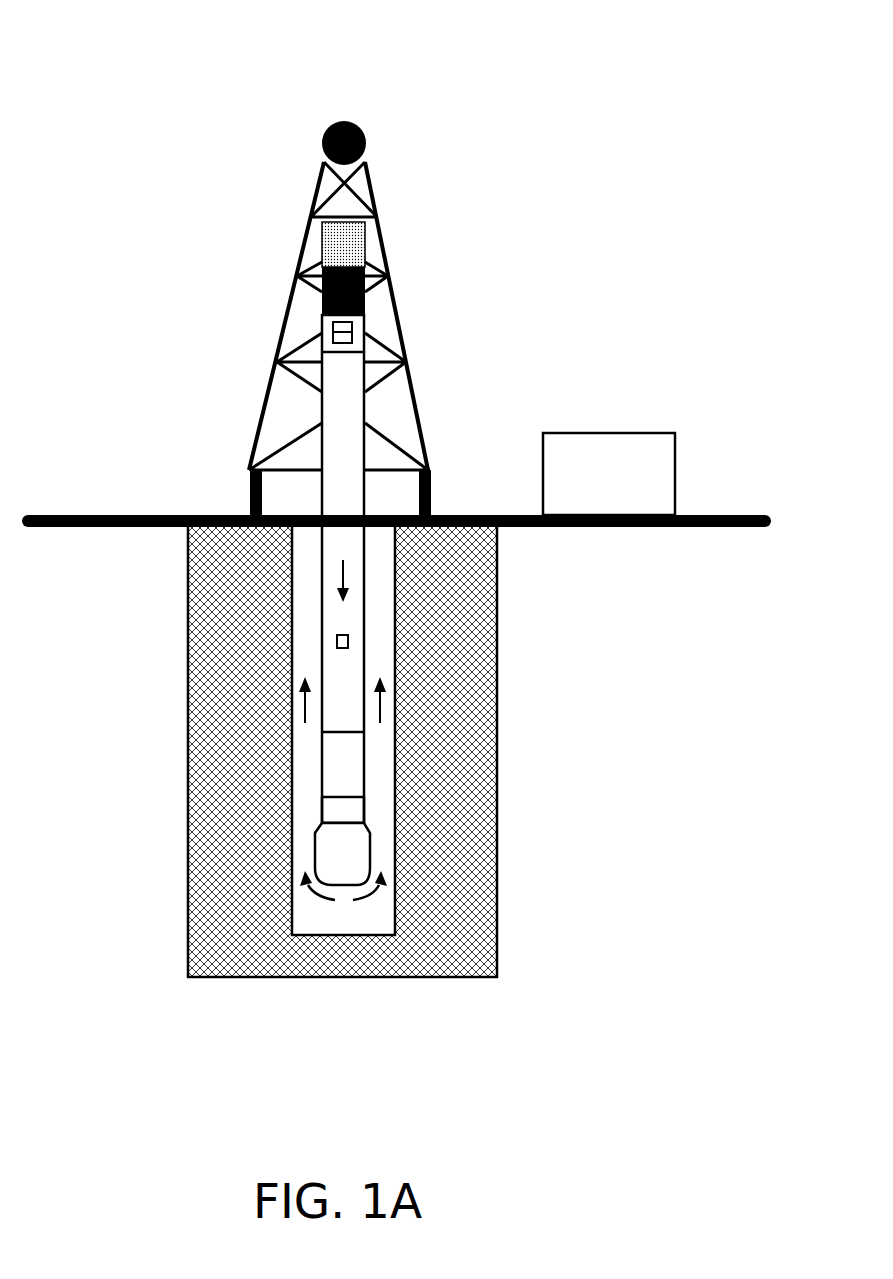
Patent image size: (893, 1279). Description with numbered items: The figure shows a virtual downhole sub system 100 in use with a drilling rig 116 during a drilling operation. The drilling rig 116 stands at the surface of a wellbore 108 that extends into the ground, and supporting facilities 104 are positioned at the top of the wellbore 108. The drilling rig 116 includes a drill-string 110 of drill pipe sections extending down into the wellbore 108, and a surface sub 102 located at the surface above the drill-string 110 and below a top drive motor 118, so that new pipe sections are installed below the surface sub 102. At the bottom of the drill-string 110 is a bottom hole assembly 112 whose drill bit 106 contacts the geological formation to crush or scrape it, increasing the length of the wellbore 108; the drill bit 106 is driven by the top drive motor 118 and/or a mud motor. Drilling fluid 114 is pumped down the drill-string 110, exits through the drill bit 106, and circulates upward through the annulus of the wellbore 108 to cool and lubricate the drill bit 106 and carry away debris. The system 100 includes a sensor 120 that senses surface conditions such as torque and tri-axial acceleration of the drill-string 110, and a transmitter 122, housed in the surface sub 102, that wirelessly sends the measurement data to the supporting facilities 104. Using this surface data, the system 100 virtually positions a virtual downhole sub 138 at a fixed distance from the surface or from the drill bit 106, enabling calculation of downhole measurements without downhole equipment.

The virtual downhole sub system 100 is at (192, 69).
The surface sub 102 is at (338, 604).
The supporting facilities 104 is at (609, 474).
The drill bit 106 is at (372, 856).
The wellbore 108 is at (292, 574).
The drill-string 110 is at (378, 318).
The bottom hole assembly 112 is at (320, 780).
The drilling fluid 114 is at (303, 753).
The drilling rig 116 is at (376, 192).
The top drive motor 118 is at (322, 290).
The sensor 120 is at (352, 325).
The transmitter 122 is at (352, 333).
The virtual downhole sub 138 is at (337, 641).